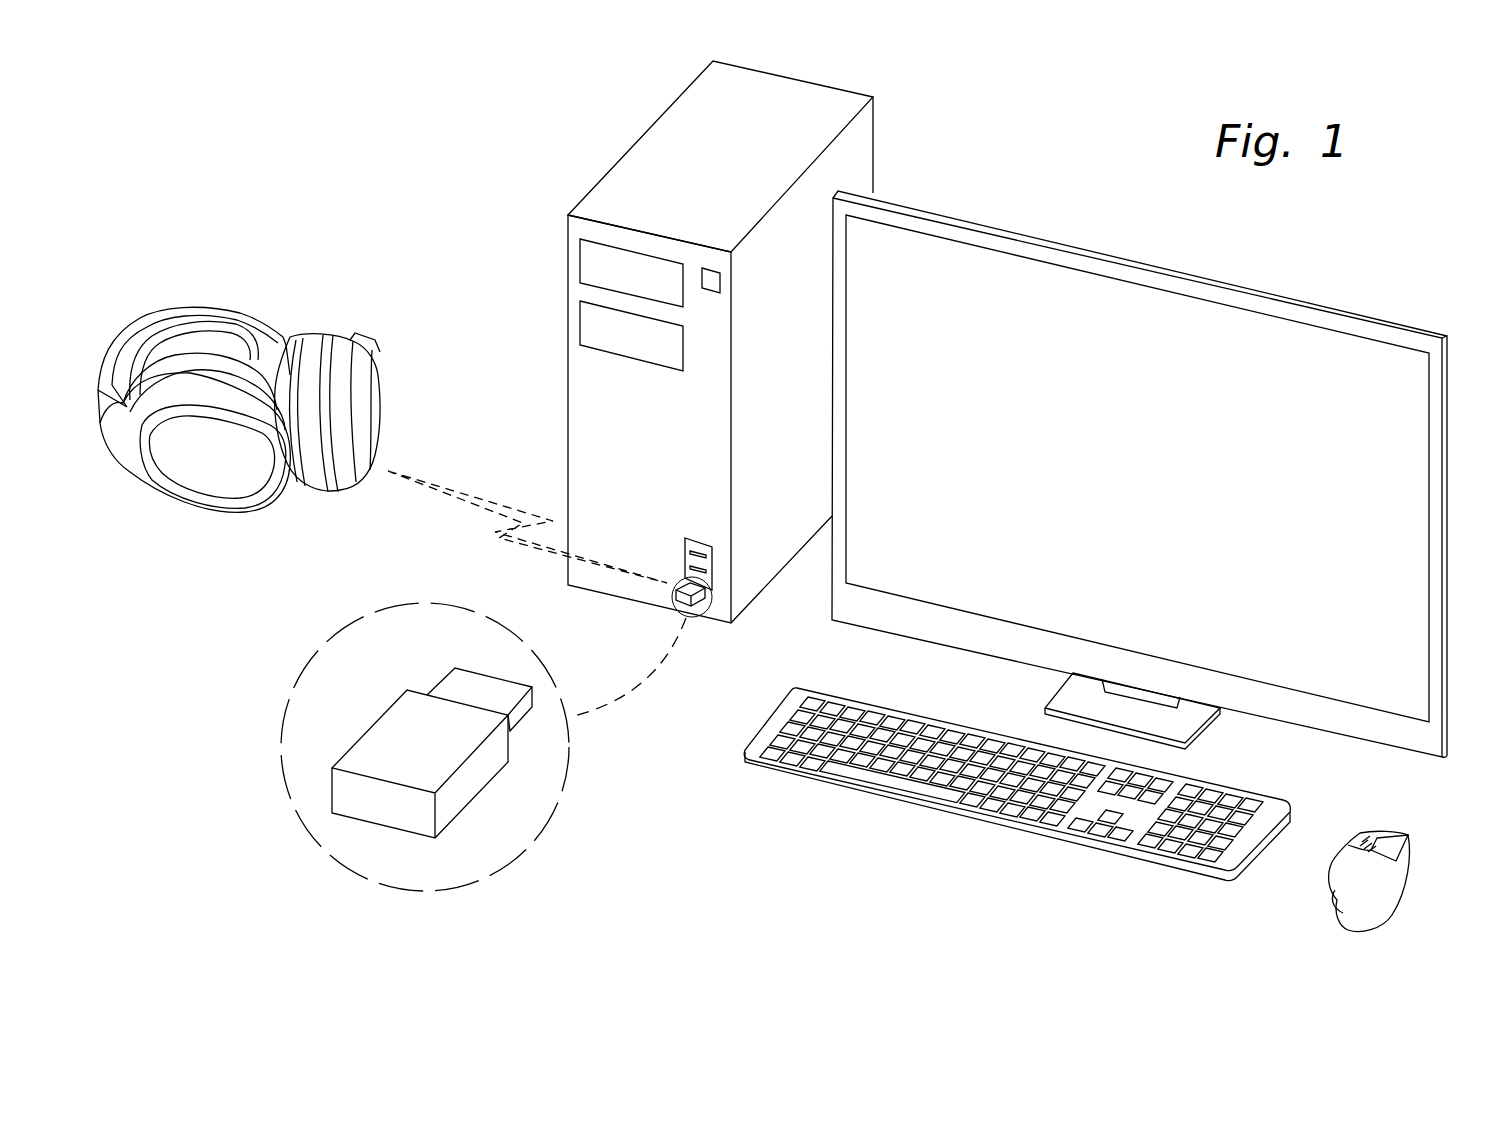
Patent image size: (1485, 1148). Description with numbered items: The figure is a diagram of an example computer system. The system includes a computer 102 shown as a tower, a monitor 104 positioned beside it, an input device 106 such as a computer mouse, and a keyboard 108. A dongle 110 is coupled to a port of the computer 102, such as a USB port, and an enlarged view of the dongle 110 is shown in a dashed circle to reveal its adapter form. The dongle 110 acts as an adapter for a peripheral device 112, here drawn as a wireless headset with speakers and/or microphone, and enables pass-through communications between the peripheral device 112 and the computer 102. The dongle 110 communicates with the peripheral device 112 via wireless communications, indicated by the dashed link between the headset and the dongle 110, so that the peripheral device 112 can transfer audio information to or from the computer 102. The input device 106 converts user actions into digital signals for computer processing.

The computer 102 is at (655, 133).
The monitor 104 is at (1152, 267).
The input device 106 is at (1390, 912).
The keyboard 108 is at (895, 802).
The dongle 110 is at (702, 607).
The peripheral device 112 is at (197, 302).